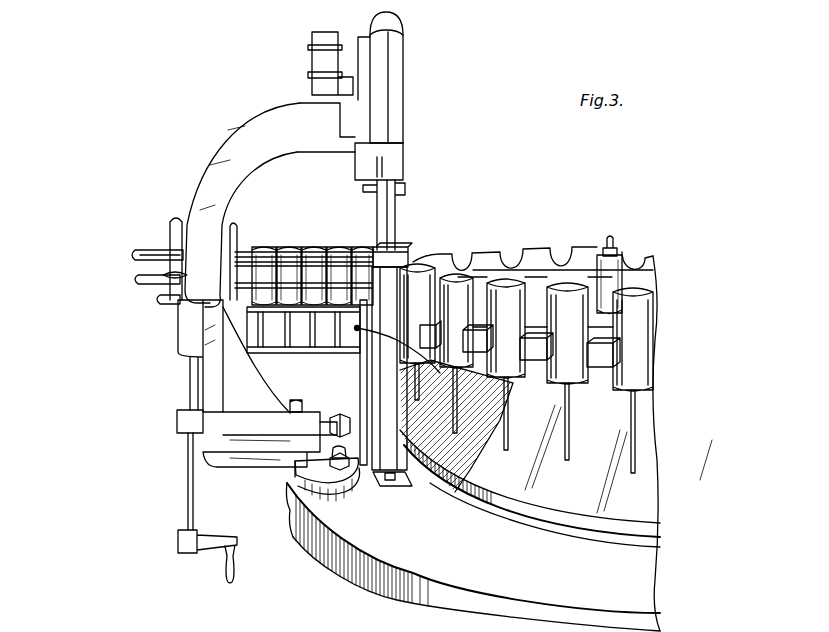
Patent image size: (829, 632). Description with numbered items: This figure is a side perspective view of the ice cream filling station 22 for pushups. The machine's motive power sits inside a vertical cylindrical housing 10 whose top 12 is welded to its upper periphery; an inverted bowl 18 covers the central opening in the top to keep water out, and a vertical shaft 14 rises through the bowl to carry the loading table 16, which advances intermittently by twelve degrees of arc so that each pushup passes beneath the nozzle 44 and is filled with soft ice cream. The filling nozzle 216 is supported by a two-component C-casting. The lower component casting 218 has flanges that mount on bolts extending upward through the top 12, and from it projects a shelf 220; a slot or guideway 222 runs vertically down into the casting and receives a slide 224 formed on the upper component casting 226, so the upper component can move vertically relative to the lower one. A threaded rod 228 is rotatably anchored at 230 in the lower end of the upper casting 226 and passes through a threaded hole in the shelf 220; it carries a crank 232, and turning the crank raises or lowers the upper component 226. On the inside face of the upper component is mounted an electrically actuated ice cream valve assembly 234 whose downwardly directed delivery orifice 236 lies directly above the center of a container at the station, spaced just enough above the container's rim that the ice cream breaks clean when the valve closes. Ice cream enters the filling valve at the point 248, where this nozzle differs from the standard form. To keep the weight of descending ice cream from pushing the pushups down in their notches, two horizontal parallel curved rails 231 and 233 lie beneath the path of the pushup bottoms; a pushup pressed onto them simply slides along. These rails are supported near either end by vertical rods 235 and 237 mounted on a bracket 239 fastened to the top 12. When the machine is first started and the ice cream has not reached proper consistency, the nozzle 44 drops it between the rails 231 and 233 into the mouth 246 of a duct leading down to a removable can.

The cylindrical housing 10 is at (656, 617).
The top 12 is at (658, 567).
The vertical shaft 14 is at (613, 237).
The loading table 16 is at (553, 252).
The inverted bowl 18 is at (648, 463).
The ice cream loading station 22 is at (415, 232).
The nozzle 44 is at (388, 246).
The filling nozzle 216 is at (398, 205).
The lower component casting 218 is at (255, 468).
The shelf 220 is at (182, 427).
The slot or guideway 222 is at (208, 302).
The slide 224 is at (160, 297).
The upper component casting 226 is at (210, 158).
The threaded rod 228 is at (186, 497).
The anchor point 230 is at (192, 362).
The curved rail 231 is at (447, 387).
The crank 232 is at (207, 557).
The curved rail 233 is at (440, 373).
The ice cream valve assembly 234 is at (405, 77).
The vertical rod 235 is at (400, 521).
The delivery orifice 236 is at (385, 246).
The vertical rod 237 is at (490, 521).
The bracket 239 is at (398, 484).
The duct mouth 246 is at (347, 418).
The ice cream inlet point 248 is at (370, 188).